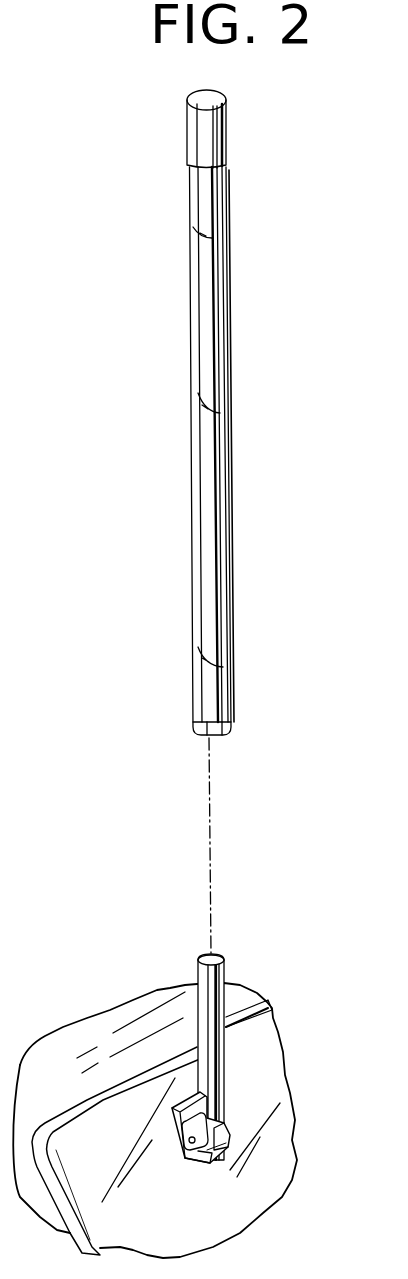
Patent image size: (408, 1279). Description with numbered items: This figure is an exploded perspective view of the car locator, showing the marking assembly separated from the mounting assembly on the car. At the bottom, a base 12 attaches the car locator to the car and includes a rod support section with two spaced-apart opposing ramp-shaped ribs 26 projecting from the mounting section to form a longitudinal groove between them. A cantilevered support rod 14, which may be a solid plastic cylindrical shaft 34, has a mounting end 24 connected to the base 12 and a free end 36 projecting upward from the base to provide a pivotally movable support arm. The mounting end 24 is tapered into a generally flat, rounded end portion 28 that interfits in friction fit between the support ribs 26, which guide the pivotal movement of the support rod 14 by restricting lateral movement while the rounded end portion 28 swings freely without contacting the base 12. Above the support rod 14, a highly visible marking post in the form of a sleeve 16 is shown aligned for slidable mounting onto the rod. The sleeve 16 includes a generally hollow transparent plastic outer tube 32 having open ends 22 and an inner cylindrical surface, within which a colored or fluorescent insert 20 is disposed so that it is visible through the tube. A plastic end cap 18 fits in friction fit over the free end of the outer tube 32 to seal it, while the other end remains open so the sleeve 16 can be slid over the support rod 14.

The base 12 is at (194, 1139).
The support rod 14 is at (231, 1043).
The sleeve 16 is at (243, 521).
The end cap 18 is at (225, 135).
The insert 20 is at (213, 269).
The open ends 22 is at (219, 738).
The mounting end 24 is at (222, 1107).
The ramp-shaped ribs 26 is at (220, 1133).
The end portion 28 is at (213, 1155).
The outer tube 32 is at (231, 468).
The cylindrical shaft 34 is at (198, 1040).
The free end 36 is at (215, 957).